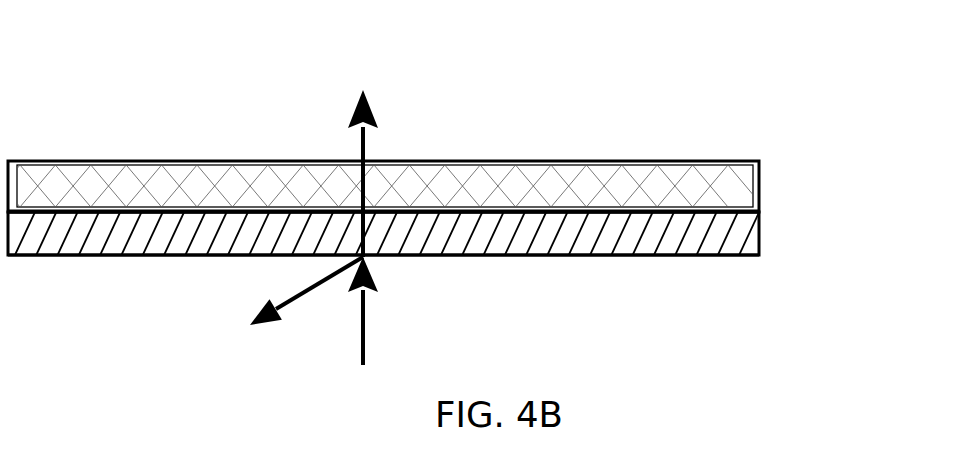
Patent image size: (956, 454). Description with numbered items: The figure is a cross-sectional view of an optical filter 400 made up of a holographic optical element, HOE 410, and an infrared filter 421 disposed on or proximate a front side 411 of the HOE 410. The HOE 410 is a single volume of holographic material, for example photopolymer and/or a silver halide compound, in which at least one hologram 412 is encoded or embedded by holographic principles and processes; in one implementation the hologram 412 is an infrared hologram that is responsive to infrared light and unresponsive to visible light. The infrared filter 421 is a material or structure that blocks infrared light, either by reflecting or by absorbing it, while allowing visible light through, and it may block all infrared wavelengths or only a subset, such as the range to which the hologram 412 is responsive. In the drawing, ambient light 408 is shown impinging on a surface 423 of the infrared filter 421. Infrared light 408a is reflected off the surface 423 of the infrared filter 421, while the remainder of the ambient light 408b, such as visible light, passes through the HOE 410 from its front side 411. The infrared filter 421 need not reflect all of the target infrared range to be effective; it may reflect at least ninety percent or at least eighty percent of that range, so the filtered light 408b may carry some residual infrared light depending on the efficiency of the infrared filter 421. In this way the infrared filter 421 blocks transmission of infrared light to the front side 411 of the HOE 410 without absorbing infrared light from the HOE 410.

The optical filter 400 is at (430, 189).
The ambient light 408 is at (359, 328).
The infrared light 408a is at (275, 299).
The remainder of ambient light 408b is at (365, 162).
The HOE 410 is at (427, 157).
The front side 411 is at (521, 211).
The hologram 412 is at (703, 183).
The infrared filter 421 is at (758, 233).
The surface 423 is at (567, 255).